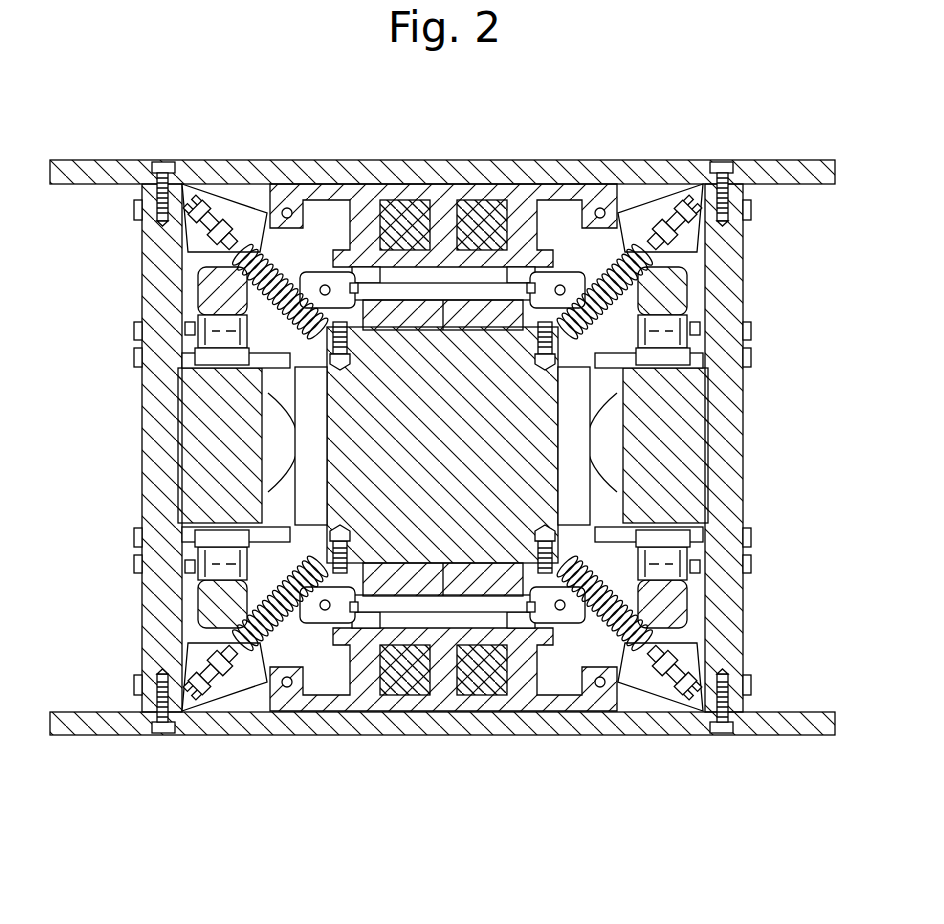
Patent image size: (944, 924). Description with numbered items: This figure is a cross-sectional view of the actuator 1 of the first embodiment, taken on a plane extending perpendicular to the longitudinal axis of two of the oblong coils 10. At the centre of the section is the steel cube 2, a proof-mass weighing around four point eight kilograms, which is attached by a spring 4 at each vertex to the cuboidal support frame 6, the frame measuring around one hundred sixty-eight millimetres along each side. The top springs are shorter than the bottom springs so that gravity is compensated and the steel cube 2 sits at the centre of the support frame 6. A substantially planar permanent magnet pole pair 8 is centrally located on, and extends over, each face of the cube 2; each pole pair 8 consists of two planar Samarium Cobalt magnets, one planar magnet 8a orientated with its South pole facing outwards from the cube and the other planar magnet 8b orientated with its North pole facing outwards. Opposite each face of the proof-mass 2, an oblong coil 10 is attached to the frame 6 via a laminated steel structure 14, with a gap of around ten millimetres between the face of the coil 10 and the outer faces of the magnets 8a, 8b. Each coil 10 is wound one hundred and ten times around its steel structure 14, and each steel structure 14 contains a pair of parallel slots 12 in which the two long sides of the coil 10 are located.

The actuator 1 is at (117, 96).
The steel cube 2 is at (458, 466).
The spring 4 is at (216, 636).
The support frame 6 is at (590, 160).
The permanent magnet pole pair 8 is at (443, 300).
The planar magnet 8a is at (302, 441).
The planar magnet 8b is at (582, 436).
The oblong coil 10 is at (420, 685).
The slot 12 is at (403, 637).
The laminated steel structure 14 is at (366, 205).